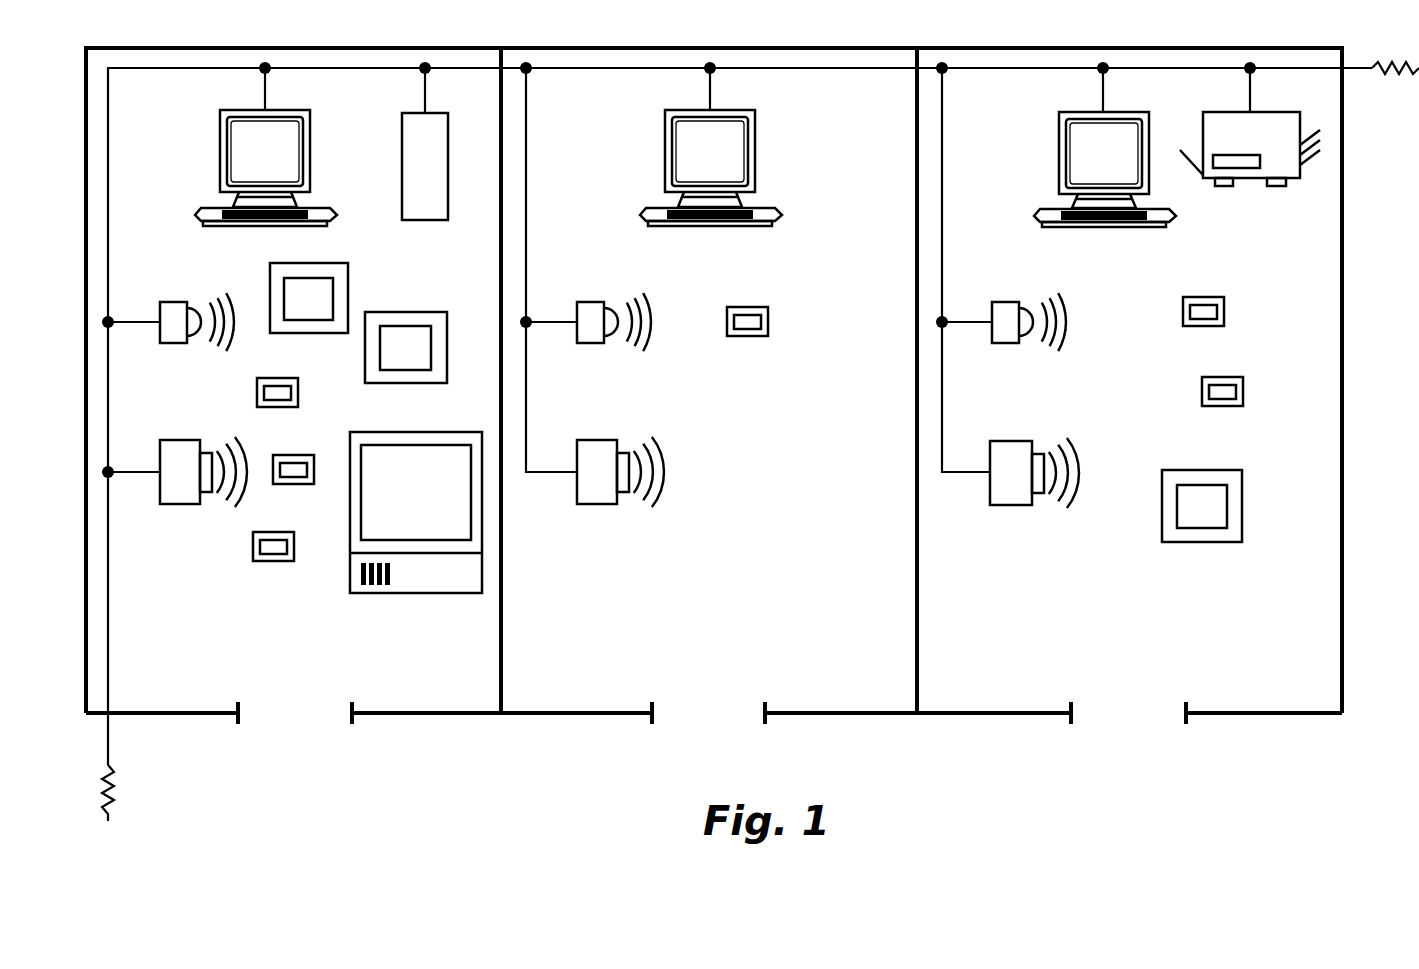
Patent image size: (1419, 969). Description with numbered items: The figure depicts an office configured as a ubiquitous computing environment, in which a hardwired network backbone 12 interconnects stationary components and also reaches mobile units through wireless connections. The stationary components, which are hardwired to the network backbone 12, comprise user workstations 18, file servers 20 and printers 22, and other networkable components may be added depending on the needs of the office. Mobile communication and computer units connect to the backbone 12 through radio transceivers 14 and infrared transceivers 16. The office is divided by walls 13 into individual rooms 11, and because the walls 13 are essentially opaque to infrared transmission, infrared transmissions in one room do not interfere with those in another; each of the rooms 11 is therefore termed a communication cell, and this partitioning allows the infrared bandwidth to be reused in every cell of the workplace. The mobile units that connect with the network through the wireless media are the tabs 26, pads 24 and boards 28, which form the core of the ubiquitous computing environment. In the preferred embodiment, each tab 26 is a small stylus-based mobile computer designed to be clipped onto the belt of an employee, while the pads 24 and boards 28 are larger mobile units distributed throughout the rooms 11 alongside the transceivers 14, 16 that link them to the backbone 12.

The rooms 11 is at (438, 673).
The hardwired network backbone 12 is at (108, 625).
The walls 13 is at (805, 48).
The radio transceivers 14 is at (178, 440).
The infrared transceivers 16 is at (174, 302).
The workstations 18 is at (220, 145).
The file servers 20 is at (402, 165).
The printers 22 is at (1215, 112).
The pads 24 is at (348, 276).
The tabs 26 is at (296, 455).
The boards 28 is at (415, 593).